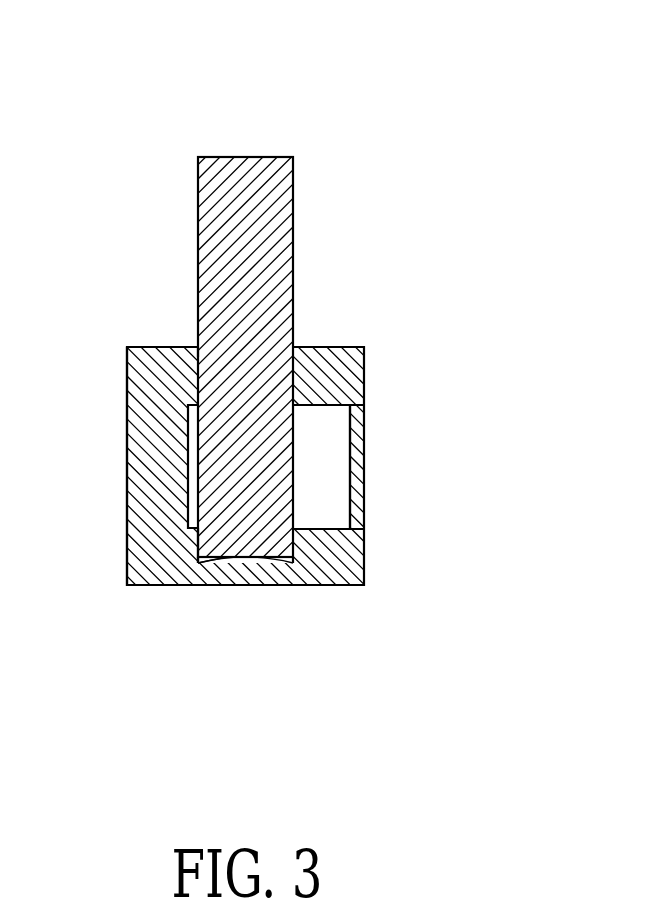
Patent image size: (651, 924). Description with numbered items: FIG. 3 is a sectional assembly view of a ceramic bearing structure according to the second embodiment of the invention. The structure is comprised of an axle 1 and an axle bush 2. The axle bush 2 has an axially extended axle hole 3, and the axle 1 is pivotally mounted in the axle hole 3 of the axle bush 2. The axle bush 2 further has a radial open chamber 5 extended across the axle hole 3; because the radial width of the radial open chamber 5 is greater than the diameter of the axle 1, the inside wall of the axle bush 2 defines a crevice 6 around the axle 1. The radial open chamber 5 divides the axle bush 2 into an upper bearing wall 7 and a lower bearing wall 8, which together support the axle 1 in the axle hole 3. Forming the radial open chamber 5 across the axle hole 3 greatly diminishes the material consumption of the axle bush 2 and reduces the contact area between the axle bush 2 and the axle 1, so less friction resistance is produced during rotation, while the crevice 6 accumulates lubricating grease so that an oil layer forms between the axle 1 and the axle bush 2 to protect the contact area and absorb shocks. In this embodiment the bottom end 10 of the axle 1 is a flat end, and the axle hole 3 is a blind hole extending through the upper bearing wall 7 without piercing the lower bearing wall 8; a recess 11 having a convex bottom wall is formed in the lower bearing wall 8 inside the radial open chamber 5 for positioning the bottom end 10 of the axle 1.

The axle 1 is at (293, 158).
The axle bush 2 is at (340, 372).
The axle hole 3 is at (198, 347).
The radial open chamber 5 is at (322, 483).
The crevice 6 is at (193, 450).
The upper bearing wall 7 is at (127, 352).
The lower bearing wall 8 is at (198, 541).
The bottom end 10 is at (268, 559).
The recess 11 is at (215, 565).